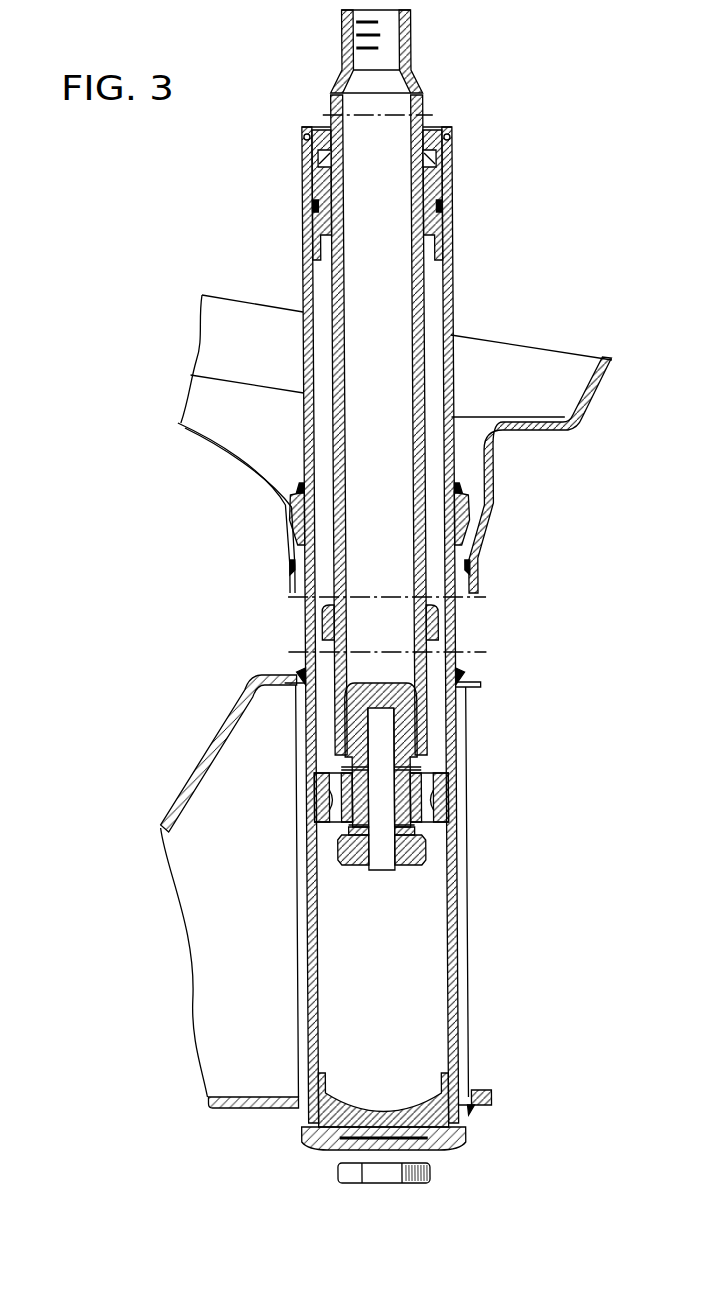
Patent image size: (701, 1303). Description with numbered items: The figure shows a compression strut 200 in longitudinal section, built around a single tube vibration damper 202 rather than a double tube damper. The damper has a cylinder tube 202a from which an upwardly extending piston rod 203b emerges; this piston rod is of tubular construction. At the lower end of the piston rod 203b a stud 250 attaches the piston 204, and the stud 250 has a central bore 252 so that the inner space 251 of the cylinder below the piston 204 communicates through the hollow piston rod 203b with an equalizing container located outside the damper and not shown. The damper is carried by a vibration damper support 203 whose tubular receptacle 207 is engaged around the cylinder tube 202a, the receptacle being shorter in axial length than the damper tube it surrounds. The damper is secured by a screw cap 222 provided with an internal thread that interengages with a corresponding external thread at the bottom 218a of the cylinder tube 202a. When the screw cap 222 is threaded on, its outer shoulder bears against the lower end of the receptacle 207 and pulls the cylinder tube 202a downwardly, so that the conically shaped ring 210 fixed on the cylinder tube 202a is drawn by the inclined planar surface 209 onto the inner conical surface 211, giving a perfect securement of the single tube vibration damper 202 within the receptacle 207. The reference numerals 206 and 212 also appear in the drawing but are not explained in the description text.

The compression strut 200 is at (151, 585).
The single tube vibration damper 202 is at (436, 127).
The cylinder tube 202a is at (464, 684).
The vibration damper support 203 is at (173, 812).
The piston rod 203b is at (416, 295).
The piston 204 is at (434, 810).
The rod guide seal 206 is at (436, 180).
The tubular receptacle 207 is at (458, 603).
The inclined planar surface 209 is at (473, 537).
The conically shaped ring 210 is at (450, 492).
The inner conical surface 211 is at (468, 513).
The bottom nut 212 is at (322, 1170).
The bottom of the cylinder tube 218a is at (418, 1100).
The screw cap 222 is at (457, 1140).
The stud 250 is at (351, 862).
The inner space of the cylinder 251 is at (430, 990).
The central bore 252 is at (382, 868).